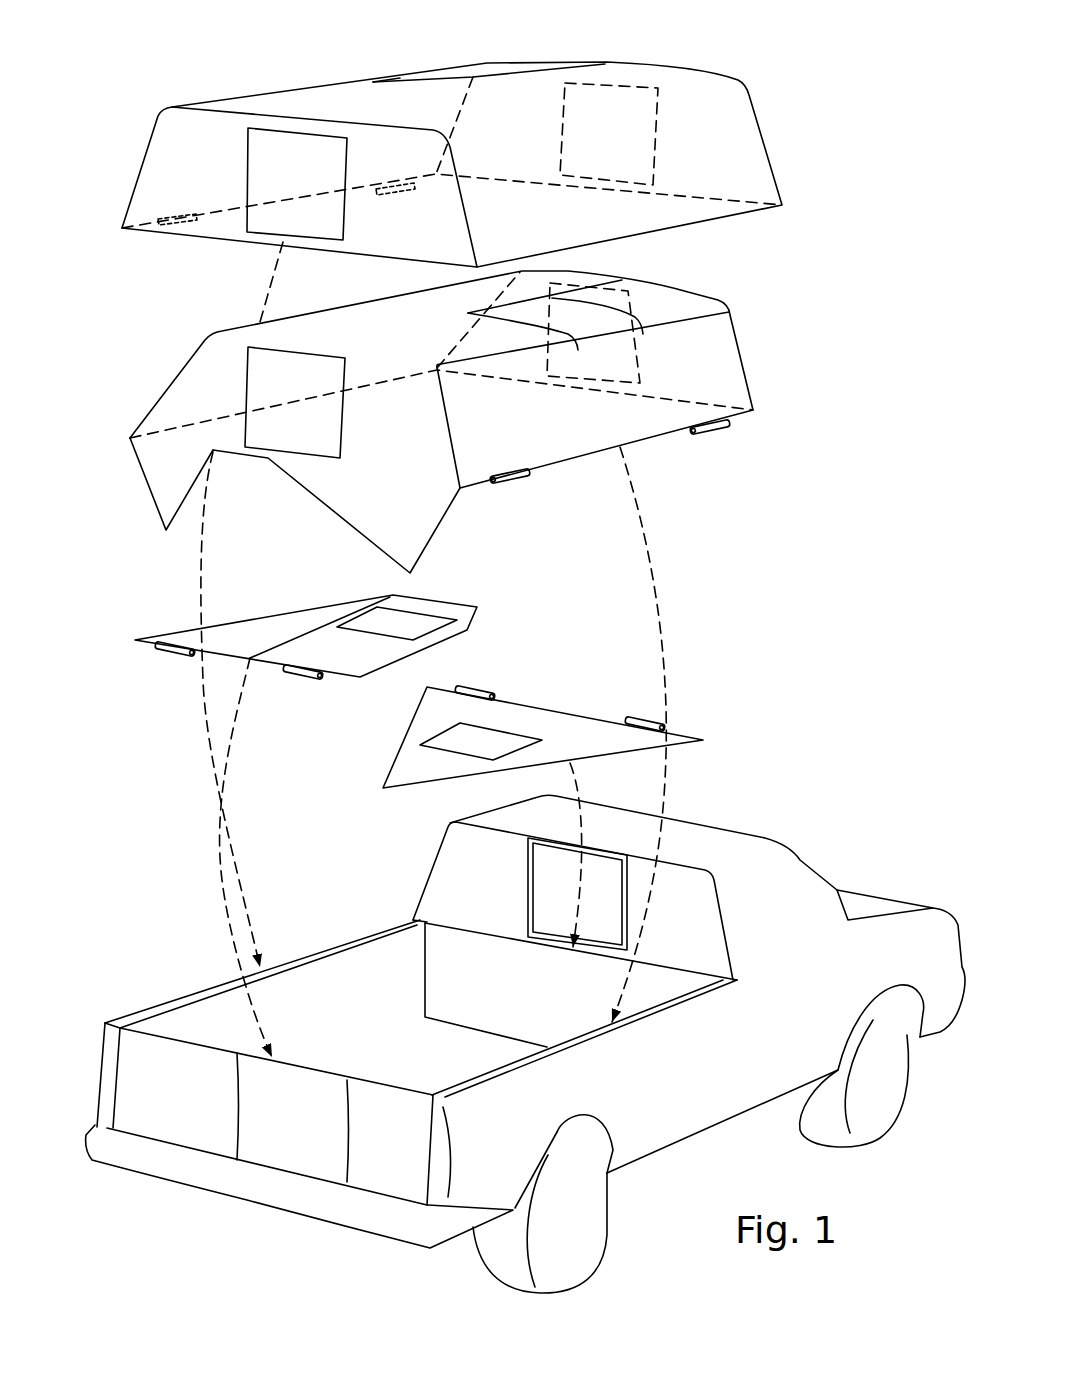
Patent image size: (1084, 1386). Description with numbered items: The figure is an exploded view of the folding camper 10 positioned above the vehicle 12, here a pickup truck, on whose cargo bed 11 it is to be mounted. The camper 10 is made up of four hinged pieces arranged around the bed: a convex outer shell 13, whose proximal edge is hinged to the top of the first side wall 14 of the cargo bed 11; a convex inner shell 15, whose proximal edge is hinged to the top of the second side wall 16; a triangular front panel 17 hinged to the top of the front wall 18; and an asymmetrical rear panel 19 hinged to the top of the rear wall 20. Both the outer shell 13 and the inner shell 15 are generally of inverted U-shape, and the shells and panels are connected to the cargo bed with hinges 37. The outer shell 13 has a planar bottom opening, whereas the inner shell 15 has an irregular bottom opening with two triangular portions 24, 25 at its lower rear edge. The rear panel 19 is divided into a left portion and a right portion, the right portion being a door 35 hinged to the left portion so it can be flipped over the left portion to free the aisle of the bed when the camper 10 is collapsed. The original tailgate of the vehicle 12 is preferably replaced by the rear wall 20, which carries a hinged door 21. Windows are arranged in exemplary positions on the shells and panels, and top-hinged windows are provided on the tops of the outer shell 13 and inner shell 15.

The folding camper 10 is at (783, 265).
The cargo bed 11 is at (421, 1047).
The vehicle 12 is at (888, 900).
The convex outer shell 13 is at (770, 142).
The first side wall 14 is at (343, 950).
The convex inner shell 15 is at (747, 357).
The second side wall 16 is at (580, 1037).
The front panel 17 is at (545, 713).
The front wall 18 is at (488, 932).
The rear panel 19 is at (258, 613).
The rear wall 20 is at (400, 1085).
The hinged door 21 is at (293, 1062).
The triangular portion 24 is at (153, 488).
The triangular portion 25 is at (433, 527).
The door 35 is at (343, 671).
The hinges 37 is at (517, 483).